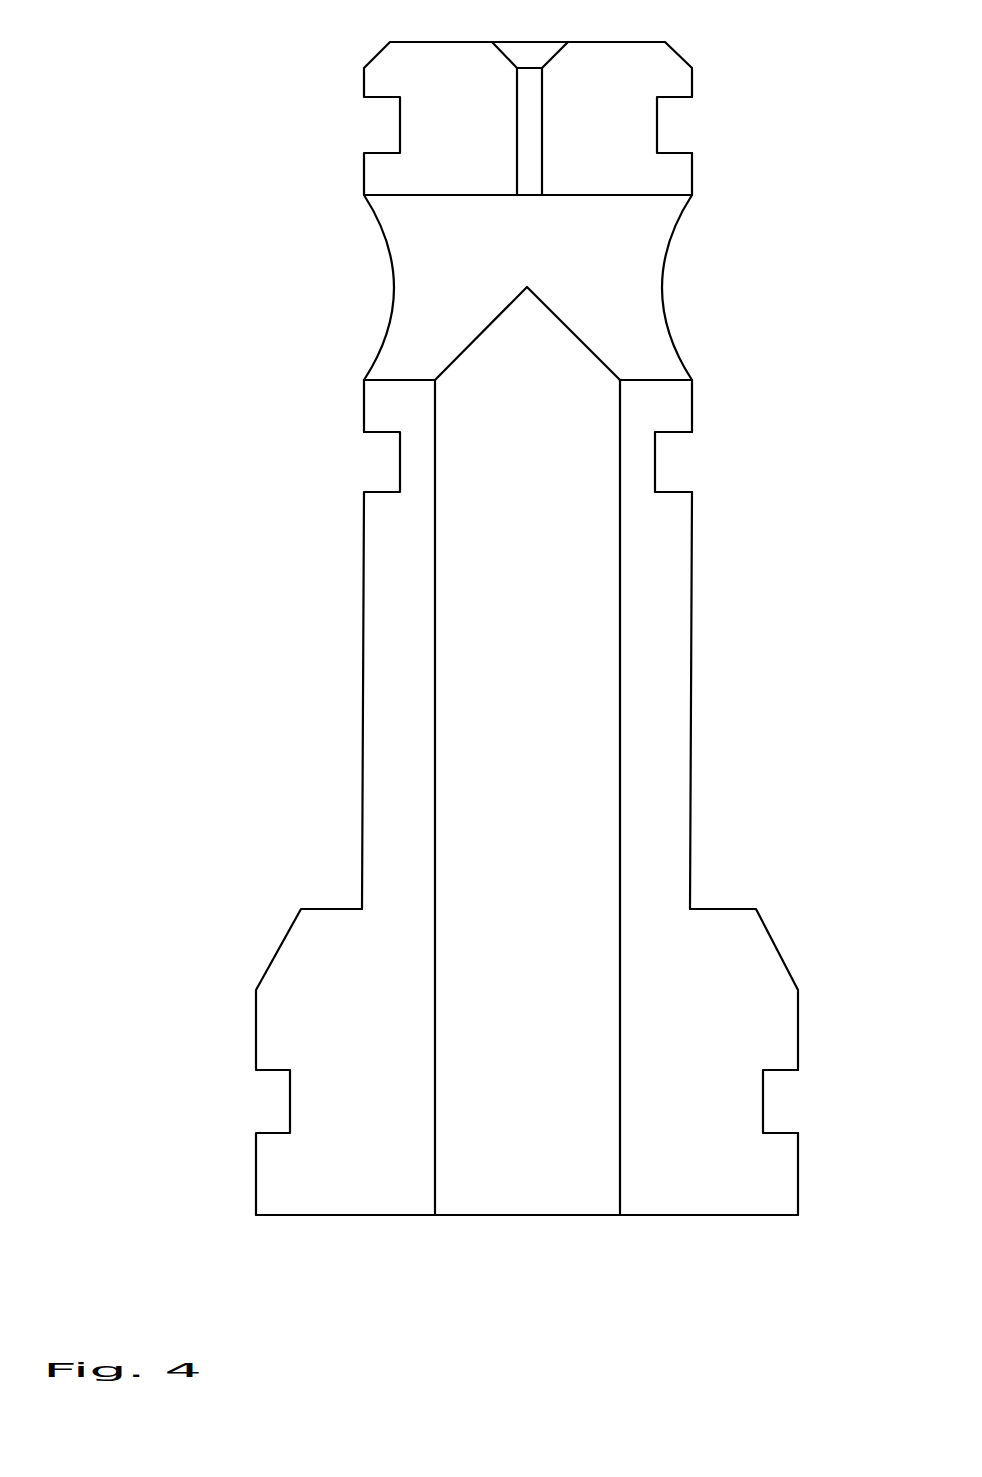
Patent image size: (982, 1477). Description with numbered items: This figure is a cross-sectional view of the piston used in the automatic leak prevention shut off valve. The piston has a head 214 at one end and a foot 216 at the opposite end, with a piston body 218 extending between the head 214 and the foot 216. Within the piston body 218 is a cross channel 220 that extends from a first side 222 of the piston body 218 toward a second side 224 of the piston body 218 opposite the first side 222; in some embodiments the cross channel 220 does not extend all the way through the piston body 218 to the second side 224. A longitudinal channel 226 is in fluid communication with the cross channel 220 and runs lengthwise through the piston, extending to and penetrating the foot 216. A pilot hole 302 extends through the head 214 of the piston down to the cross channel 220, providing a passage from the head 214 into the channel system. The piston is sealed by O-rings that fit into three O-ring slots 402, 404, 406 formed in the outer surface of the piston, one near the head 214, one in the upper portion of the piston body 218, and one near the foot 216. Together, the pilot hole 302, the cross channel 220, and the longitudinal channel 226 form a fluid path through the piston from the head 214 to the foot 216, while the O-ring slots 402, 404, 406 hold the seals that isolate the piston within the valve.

The head 214 is at (631, 43).
The foot 216 is at (741, 1216).
The piston body 218 is at (754, 992).
The cross channel 220 is at (547, 259).
The first side 222 is at (363, 418).
The second side 224 is at (693, 418).
The longitudinal channel 226 is at (549, 534).
The pilot hole 302 is at (542, 131).
The O-ring slot 402 is at (708, 125).
The O-ring slot 404 is at (702, 466).
The O-ring slot 406 is at (801, 1101).